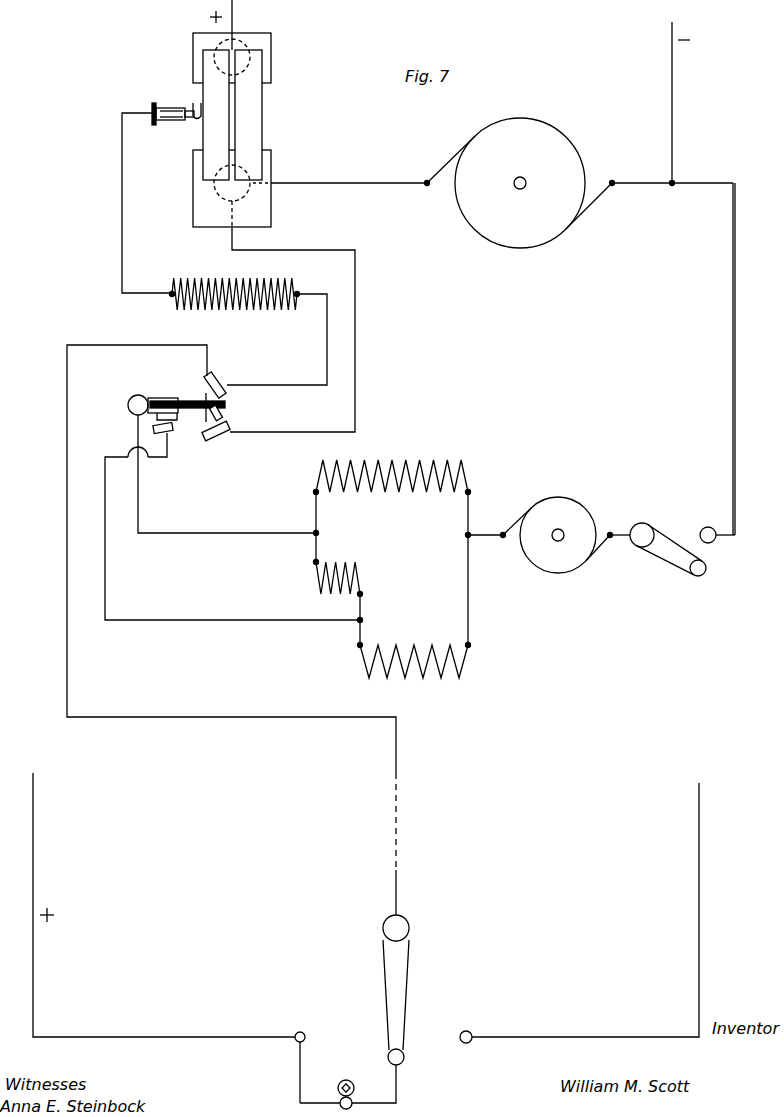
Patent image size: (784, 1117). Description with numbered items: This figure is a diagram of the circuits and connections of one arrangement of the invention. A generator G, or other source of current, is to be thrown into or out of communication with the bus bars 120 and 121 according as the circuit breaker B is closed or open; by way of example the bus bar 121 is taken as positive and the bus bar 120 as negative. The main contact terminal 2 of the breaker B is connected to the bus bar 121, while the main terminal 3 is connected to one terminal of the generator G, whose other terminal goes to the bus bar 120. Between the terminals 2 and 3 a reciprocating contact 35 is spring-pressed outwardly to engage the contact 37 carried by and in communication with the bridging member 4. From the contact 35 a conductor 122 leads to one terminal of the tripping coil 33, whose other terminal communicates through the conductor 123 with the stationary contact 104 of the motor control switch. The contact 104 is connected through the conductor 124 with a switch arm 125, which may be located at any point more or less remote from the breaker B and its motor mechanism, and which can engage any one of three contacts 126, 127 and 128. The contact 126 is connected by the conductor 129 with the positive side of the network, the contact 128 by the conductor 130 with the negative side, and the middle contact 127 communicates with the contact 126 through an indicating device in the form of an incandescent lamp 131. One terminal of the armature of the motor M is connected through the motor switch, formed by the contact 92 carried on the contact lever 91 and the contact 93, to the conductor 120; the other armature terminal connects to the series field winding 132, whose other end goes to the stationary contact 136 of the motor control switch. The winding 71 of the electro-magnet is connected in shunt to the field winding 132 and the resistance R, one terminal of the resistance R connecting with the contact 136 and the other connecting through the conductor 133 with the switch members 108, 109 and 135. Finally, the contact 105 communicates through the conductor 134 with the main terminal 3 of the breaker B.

The bus bar 121 is at (236, 12).
The main contact terminal 2 is at (271, 58).
The main contact terminal 3 is at (271, 212).
The bridging member 4 is at (226, 108).
The circuit breaker B is at (255, 133).
The reciprocating contact 35 is at (195, 109).
The contact 37 is at (196, 122).
The generator G is at (502, 317).
The bus bar 120 is at (673, 85).
The conductor 122 is at (123, 203).
The tripping coil 33 is at (255, 308).
The conductor 123 is at (326, 340).
The conductor 134 is at (357, 363).
The stationary contact 104 is at (222, 382).
The motor control switch member 108 is at (205, 393).
The motor control switch member 109 is at (222, 414).
The contact 105 is at (222, 438).
The motor control switch member 135 is at (180, 424).
The stationary contact 136 is at (172, 438).
The conductor 133 is at (140, 503).
The electro-magnet winding 71 is at (397, 464).
The resistance R is at (350, 560).
The series field winding 132 is at (430, 674).
The motor M is at (566, 525).
The contact lever 91 is at (660, 561).
The contact 92 is at (704, 574).
The contact 93 is at (712, 542).
The conductor 124 is at (66, 600).
The switch arm 125 is at (408, 972).
The middle contact 127 is at (404, 1062).
The incandescent lamp 131 is at (354, 1080).
The contact 126 is at (296, 1033).
The conductor 129 is at (88, 1037).
The contact 128 is at (470, 1042).
The conductor 130 is at (555, 1037).